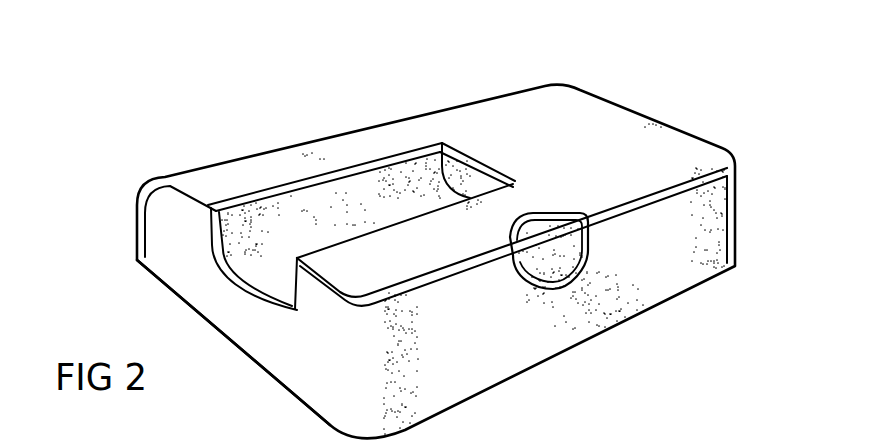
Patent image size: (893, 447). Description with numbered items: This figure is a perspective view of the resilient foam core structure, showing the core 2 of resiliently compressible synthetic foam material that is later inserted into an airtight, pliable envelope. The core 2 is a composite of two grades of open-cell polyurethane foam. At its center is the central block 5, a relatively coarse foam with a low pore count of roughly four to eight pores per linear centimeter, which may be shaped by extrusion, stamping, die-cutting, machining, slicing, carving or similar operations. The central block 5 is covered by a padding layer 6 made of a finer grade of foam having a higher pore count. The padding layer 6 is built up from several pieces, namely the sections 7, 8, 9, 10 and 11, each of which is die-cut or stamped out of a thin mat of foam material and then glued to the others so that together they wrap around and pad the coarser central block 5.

The core 2 is at (647, 69).
The central block 5 is at (570, 240).
The padding layer 6 is at (643, 131).
The section of the padding layer 7 is at (318, 150).
The section of the padding layer 8 is at (300, 383).
The section of the padding layer 9 is at (737, 211).
The section of the padding layer 10 is at (256, 224).
The section of the padding layer 11 is at (476, 181).